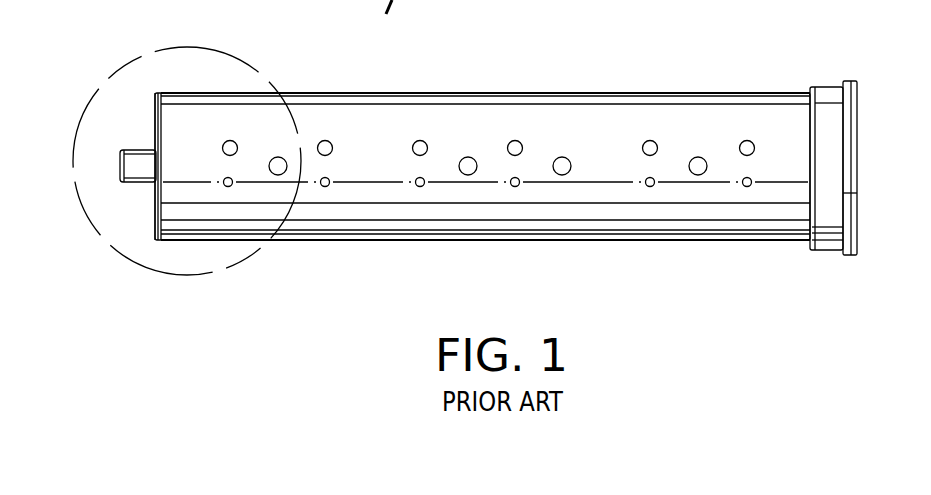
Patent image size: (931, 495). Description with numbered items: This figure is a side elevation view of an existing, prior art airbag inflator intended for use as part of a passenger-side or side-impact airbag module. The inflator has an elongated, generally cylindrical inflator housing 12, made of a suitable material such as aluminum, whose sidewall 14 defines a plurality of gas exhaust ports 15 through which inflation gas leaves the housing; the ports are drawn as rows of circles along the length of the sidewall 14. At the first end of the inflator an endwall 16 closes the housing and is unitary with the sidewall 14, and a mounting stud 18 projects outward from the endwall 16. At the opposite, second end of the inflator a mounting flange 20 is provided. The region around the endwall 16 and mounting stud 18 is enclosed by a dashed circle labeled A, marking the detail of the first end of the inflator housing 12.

The inflator housing 12 is at (477, 100).
The sidewall 14 is at (610, 92).
The gas exhaust ports 15 is at (643, 156).
The endwall 16 is at (98, 100).
The mounting stud 18 is at (122, 163).
The mounting flange 20 is at (828, 92).
The detail region A is at (250, 268).